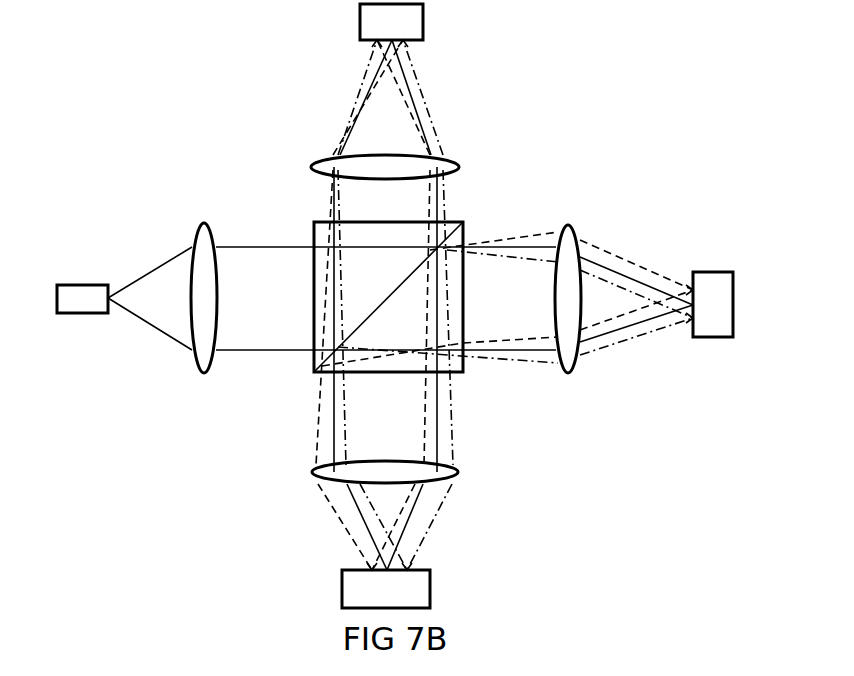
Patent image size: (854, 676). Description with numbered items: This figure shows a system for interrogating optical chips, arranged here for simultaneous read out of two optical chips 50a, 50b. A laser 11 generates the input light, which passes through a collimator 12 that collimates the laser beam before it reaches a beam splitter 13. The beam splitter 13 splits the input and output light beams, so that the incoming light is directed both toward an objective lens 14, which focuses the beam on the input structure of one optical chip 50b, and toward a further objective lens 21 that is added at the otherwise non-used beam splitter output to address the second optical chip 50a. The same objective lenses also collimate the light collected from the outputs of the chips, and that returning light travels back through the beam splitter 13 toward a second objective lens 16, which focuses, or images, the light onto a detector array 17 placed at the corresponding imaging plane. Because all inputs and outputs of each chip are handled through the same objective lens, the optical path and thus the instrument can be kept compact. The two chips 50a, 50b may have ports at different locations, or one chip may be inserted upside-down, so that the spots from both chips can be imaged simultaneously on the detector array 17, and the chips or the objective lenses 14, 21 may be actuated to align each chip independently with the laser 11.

The laser 11 is at (70, 281).
The collimator 12 is at (222, 221).
The beam splitter 13 is at (506, 225).
The objective lens 14 is at (586, 216).
The objective lens 21 is at (504, 177).
The second objective lens 16 is at (504, 501).
The detector array 17 is at (401, 601).
The optical chip 50a is at (474, 39).
The optical chip 50b is at (692, 269).